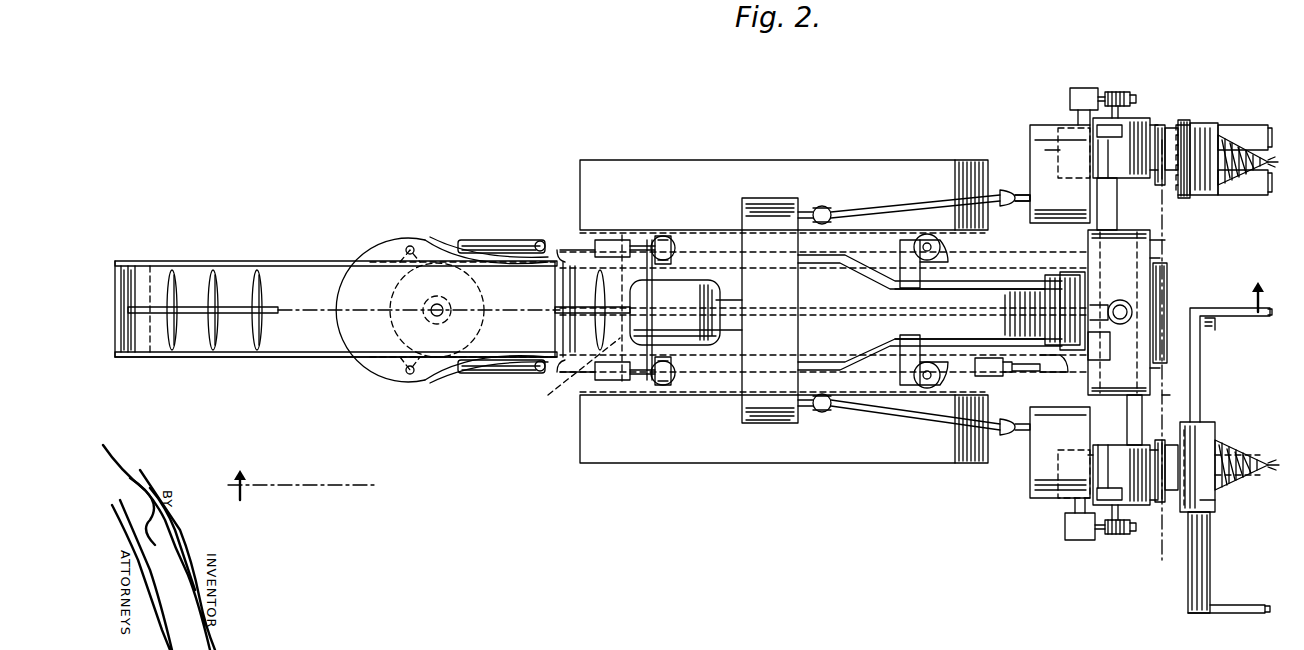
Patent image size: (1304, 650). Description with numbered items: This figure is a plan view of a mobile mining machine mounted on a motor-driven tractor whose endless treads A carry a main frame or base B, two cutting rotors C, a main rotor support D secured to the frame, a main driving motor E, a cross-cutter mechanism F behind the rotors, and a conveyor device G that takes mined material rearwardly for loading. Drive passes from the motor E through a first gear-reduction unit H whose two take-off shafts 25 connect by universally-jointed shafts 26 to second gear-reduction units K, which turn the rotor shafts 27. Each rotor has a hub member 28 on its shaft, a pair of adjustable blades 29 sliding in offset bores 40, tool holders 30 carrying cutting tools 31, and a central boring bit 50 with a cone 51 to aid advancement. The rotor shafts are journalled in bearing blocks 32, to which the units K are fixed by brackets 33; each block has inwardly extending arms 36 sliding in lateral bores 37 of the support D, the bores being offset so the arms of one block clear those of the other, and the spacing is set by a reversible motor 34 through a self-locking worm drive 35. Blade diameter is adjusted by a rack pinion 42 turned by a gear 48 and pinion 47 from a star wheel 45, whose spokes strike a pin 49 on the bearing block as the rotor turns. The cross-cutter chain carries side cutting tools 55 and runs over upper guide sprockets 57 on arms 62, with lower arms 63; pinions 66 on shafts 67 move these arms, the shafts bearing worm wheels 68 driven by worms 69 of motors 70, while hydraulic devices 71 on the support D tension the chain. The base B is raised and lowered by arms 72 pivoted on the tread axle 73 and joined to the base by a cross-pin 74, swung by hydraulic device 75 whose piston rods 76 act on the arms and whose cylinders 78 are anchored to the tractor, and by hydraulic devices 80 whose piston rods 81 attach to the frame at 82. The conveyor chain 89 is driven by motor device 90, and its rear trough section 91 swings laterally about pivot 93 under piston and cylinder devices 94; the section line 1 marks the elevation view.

The section line 1 is at (746, 393).
The take-off shaft 25 is at (822, 208).
The universally-jointed shaft 26 is at (880, 210).
The rotor shaft 27 is at (1045, 150).
The hub member 28 is at (1210, 122).
The adjustable arm or blade 29 is at (1200, 125).
The tool holder 30 is at (1240, 128).
The cutting tool 31 is at (1266, 125).
The bearing support or block 32 is at (1150, 118).
The bracket 33 is at (1058, 128).
The controllable and reversible motor 34 is at (1090, 360).
The worm drive connection 35 is at (1114, 300).
The sliding bar or arm 36 is at (1115, 206).
The lateral bore 37 is at (1088, 232).
The bore 40 is at (1215, 498).
The rack pinion 42 is at (1230, 460).
The star wheel 45 is at (1182, 120).
The pinion 47 is at (1186, 120).
The gear 48 is at (1178, 195).
The pin 49 is at (1162, 122).
The central boring bit 50 is at (1248, 468).
The cone 51 is at (1262, 470).
The side cutting tool 55 is at (1165, 395).
The upper guide sprocket 57 is at (1170, 128).
The upwardly extending arm 62 is at (1135, 160).
The downwardly extending arm 63 is at (1100, 142).
The pinion 66 is at (1086, 556).
The shaft 67 is at (1122, 311).
The worm wheel 68 is at (1128, 92).
The worm 69 is at (1115, 92).
The controllable and reversible motor 70 is at (1082, 88).
The hydraulic cylinder and piston device 71 is at (1168, 304).
The arm 72 is at (860, 268).
The tread driving axle 73 is at (580, 375).
The cross-pin 74 is at (1050, 275).
The hydraulic cylinder and piston device 75 is at (953, 249).
The piston rod 76 is at (925, 235).
The cylinder 78 is at (930, 243).
The hydraulic cylinder and piston device 80 is at (672, 240).
The piston rod 81 is at (650, 246).
The pivot connection 82 is at (660, 236).
The conveyor chain 89 is at (262, 274).
The motor device 90 is at (1012, 376).
The rear trough section 91 is at (343, 357).
The pivot 93 is at (436, 303).
The piston and cylinder device 94 is at (493, 243).
The endless treads A is at (730, 158).
The main frame or base B is at (964, 310).
The cutting rotor C is at (1222, 122).
The main rotor support D is at (1150, 232).
The main driving motor E is at (690, 280).
The cross-cutter mechanism F is at (1165, 245).
The conveyor device G is at (268, 360).
The first gear-reduction unit H is at (775, 198).
The second gear-reduction unit K is at (1038, 130).